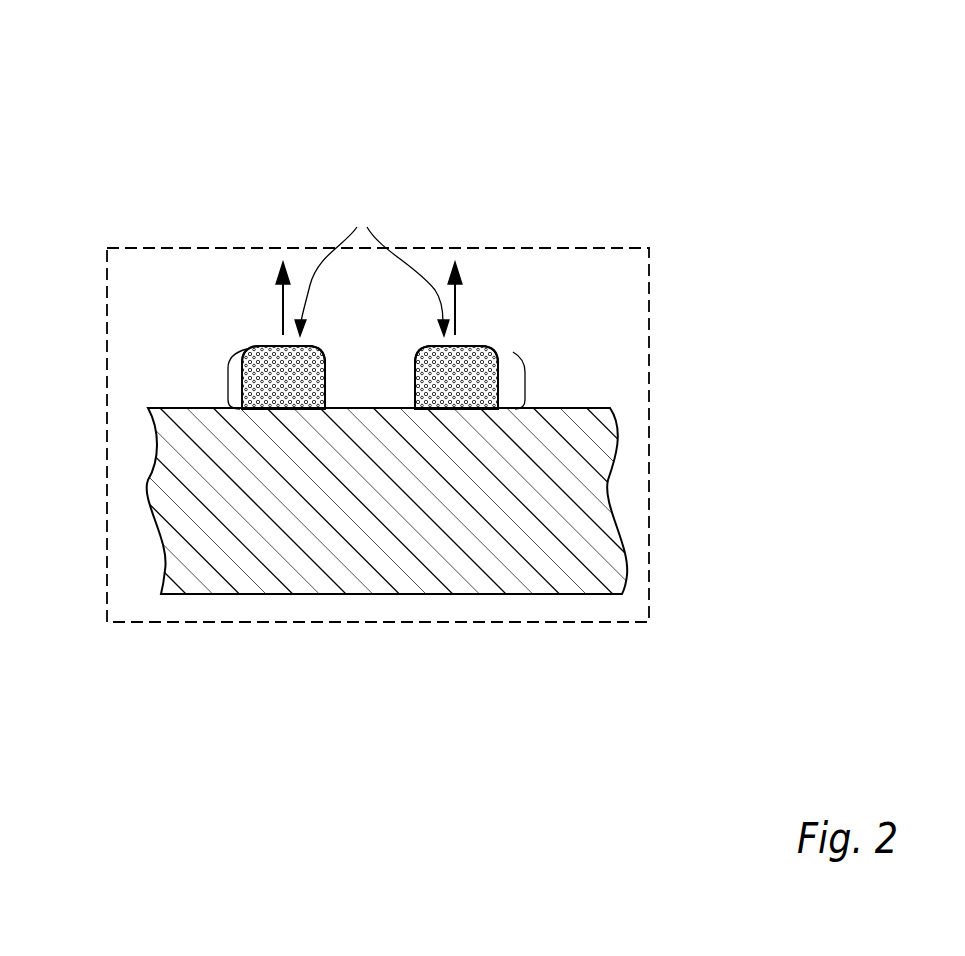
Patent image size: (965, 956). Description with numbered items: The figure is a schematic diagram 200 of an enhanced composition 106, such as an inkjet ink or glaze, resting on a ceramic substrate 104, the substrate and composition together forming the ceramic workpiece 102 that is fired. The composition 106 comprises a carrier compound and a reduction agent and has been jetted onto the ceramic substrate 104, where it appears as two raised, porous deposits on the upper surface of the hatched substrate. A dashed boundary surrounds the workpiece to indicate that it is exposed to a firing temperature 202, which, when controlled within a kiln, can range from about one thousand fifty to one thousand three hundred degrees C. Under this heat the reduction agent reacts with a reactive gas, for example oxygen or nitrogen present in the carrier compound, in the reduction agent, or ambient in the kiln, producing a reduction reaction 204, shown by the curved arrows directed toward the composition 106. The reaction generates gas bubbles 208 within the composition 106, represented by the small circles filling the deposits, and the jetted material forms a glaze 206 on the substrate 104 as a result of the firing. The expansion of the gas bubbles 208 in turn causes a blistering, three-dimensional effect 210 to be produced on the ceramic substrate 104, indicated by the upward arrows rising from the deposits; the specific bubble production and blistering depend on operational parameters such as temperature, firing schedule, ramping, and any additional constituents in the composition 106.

The schematic diagram 200 is at (838, 133).
The firing temperature 202 is at (545, 622).
The ceramic workpiece 102 is at (655, 358).
The ceramic substrate 104 is at (297, 595).
The enhanced composition 106 is at (232, 343).
The reduction reaction 204 is at (372, 258).
The glaze 206 is at (227, 378).
The gas bubbles 208 is at (247, 349).
The three-dimensional effect 210 is at (283, 303).